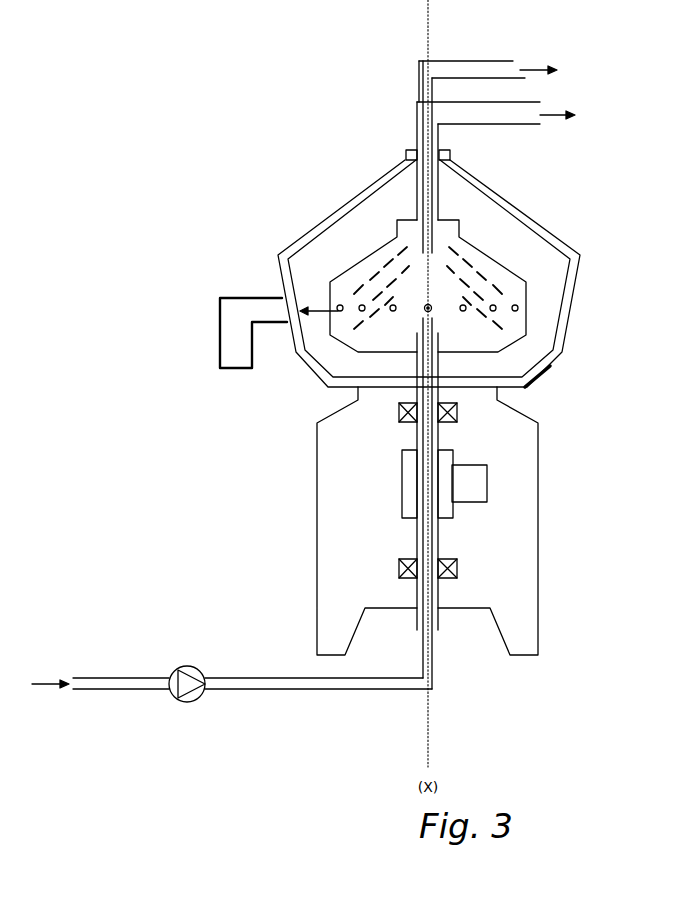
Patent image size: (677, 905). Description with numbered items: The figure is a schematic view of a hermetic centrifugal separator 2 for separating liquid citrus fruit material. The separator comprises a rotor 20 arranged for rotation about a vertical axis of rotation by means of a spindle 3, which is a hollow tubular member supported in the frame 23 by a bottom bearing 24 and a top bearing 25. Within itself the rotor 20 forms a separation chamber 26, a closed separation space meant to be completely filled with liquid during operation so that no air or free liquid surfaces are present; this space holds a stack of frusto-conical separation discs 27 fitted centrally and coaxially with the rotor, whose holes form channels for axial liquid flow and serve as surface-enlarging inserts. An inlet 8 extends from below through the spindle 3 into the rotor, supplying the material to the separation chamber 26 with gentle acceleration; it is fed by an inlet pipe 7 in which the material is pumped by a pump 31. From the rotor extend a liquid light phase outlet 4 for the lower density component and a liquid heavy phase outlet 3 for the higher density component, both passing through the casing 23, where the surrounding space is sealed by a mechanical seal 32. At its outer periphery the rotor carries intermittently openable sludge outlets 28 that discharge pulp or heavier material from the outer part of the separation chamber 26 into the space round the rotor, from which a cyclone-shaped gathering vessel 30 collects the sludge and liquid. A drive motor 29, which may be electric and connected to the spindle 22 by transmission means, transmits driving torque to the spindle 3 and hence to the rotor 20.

The centrifugal separator 2 is at (222, 150).
The spindle 3 is at (480, 115).
The liquid light phase outlet 4 is at (493, 72).
The inlet pipe 7 is at (348, 693).
The inlet 8 is at (438, 362).
The rotor 20 is at (490, 265).
The spindle 22 is at (430, 318).
The frame 23 is at (525, 203).
The bottom bearing 24 is at (458, 565).
The top bearing 25 is at (457, 413).
The separation chamber 26 is at (415, 293).
The frusto-conical separation discs 27 is at (500, 283).
The sludge outlets 28 is at (340, 320).
The drive motor 29 is at (478, 483).
The vessel 30 is at (213, 328).
The pump 31 is at (313, 283).
The mechanical seal 32 is at (413, 152).